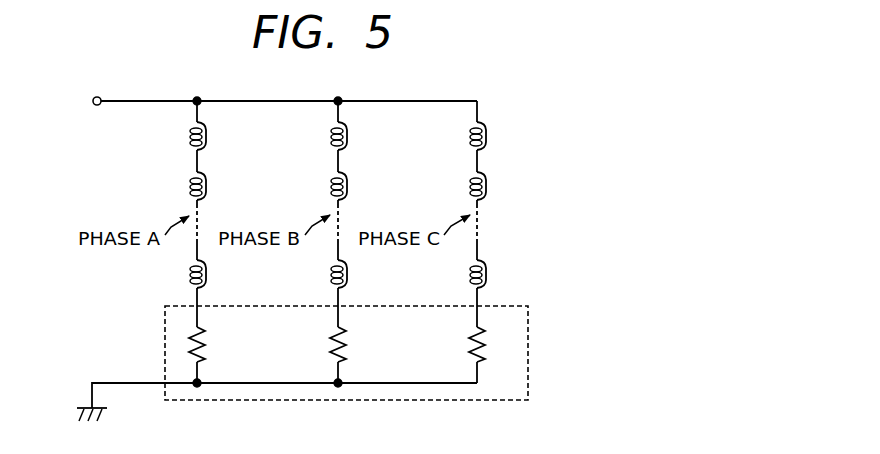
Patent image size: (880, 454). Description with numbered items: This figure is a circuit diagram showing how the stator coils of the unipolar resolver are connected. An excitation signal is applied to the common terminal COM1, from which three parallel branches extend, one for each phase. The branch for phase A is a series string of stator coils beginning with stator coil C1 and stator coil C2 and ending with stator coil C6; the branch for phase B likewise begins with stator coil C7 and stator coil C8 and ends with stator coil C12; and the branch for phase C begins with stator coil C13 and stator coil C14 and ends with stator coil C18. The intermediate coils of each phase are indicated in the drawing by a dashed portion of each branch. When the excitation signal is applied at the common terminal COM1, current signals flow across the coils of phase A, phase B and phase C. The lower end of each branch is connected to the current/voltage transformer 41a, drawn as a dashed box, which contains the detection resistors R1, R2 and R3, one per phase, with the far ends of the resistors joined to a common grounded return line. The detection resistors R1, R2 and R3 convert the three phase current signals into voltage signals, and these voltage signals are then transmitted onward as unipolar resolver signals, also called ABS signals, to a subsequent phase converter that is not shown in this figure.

The common terminal COM1 is at (272, 88).
The stator coil C1 is at (212, 137).
The stator coil C2 is at (212, 187).
The stator coil C6 is at (212, 276).
The stator coil C7 is at (353, 137).
The stator coil C8 is at (353, 187).
The stator coil C12 is at (357, 276).
The stator coil C13 is at (496, 137).
The stator coil C14 is at (496, 187).
The stator coil C18 is at (496, 276).
The detection resistor R1 is at (211, 344).
The detection resistor R2 is at (352, 344).
The detection resistor R3 is at (491, 344).
The current/voltage transformer 41a is at (530, 328).